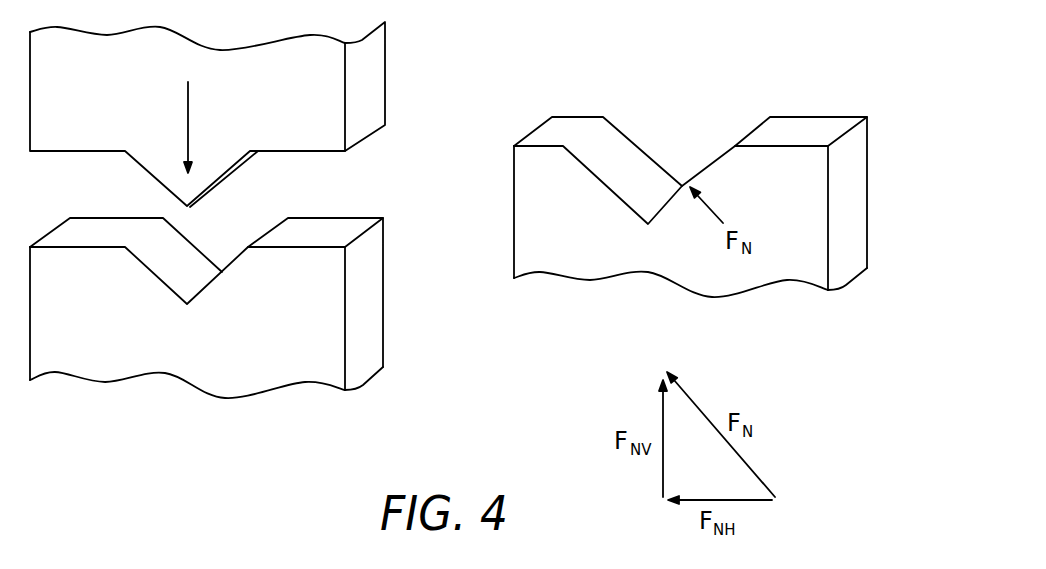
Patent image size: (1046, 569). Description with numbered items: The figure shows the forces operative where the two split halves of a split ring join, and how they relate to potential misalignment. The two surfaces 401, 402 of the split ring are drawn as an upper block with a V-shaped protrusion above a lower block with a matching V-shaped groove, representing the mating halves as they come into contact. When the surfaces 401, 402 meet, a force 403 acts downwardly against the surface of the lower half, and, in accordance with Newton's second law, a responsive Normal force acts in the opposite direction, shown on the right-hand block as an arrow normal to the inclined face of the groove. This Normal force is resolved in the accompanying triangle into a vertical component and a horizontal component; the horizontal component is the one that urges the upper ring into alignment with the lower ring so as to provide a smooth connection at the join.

The surface 401 is at (105, 227).
The surface 402 is at (48, 151).
The force 403 is at (188, 97).